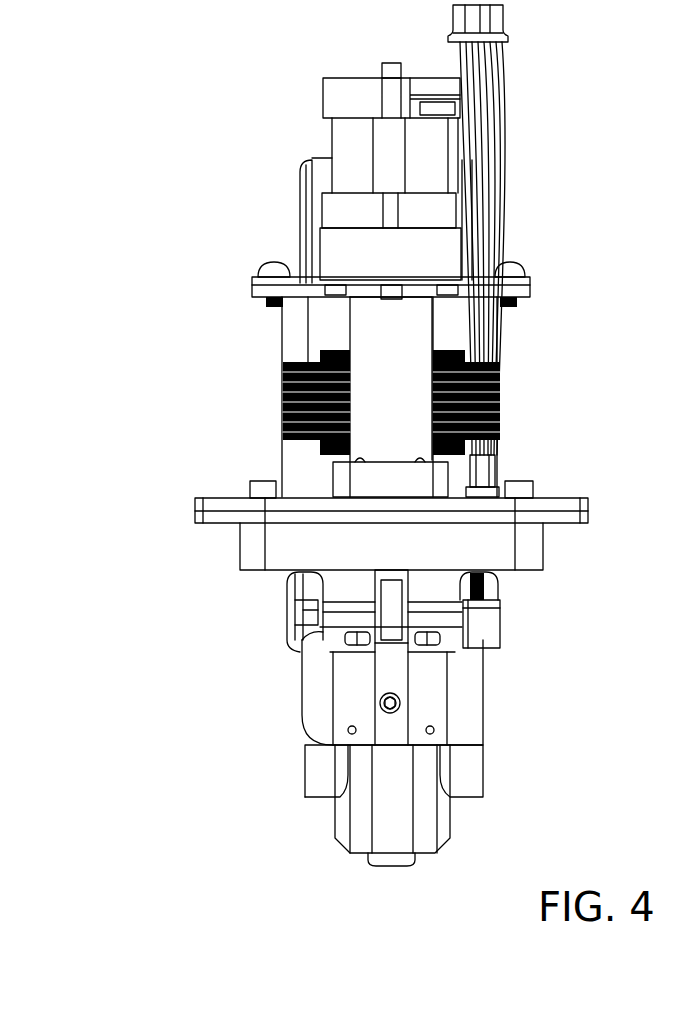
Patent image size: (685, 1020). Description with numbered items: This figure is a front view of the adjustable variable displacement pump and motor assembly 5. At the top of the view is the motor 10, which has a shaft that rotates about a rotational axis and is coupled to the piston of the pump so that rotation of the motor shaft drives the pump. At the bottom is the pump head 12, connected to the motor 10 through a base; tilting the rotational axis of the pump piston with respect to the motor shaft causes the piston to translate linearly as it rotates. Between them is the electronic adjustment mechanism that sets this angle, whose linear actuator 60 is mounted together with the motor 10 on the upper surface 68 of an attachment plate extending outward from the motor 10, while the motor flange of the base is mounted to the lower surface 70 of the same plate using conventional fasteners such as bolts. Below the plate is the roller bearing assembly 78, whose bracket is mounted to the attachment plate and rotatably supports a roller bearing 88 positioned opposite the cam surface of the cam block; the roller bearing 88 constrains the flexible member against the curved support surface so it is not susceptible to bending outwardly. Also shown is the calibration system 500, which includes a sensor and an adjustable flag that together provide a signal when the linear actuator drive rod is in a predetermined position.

The adjustable variable displacement pump and motor assembly 5 is at (92, 148).
The motor 10 is at (300, 213).
The linear actuator 60 is at (380, 335).
The upper surface 68 is at (563, 500).
The lower surface 70 is at (570, 526).
The calibration system 500 is at (500, 624).
The roller bearing assembly 78 is at (427, 588).
The roller bearing 88 is at (387, 615).
The pump head 12 is at (460, 784).